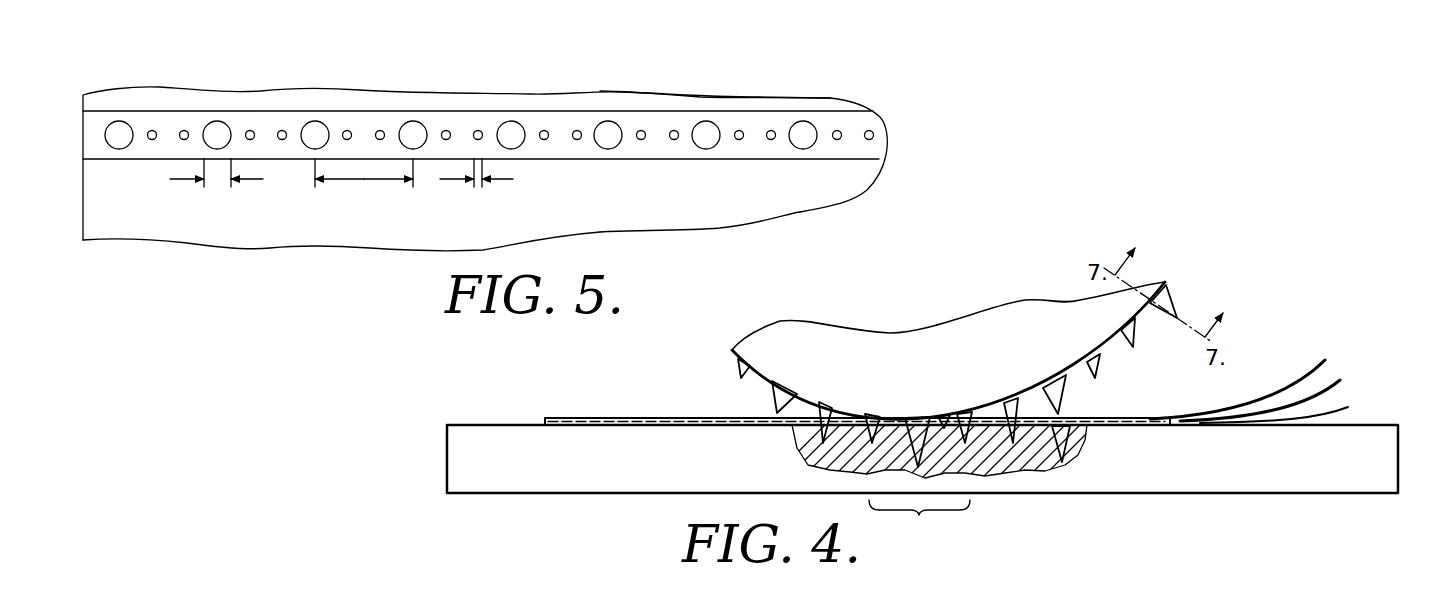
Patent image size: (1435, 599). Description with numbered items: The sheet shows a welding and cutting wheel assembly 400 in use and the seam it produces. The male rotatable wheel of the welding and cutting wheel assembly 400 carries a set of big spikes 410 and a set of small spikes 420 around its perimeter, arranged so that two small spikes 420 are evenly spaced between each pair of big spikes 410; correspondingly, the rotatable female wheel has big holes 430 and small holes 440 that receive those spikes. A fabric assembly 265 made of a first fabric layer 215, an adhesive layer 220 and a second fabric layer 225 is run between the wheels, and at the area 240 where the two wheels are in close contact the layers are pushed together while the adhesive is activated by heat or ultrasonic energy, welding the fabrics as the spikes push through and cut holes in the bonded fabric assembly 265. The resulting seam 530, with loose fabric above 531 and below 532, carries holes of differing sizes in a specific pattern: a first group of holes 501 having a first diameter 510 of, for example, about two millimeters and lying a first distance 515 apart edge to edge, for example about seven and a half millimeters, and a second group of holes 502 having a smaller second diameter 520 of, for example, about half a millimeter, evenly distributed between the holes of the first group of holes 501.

In FIG. 5, the fabric assembly 265 is at (188, 62).
In FIG. 4, the fabric assembly 265 is at (630, 418).
In FIG. 5, the first group of holes 501 is at (224, 124).
In FIG. 5, the second group of holes 502 is at (539, 134).
In FIG. 5, the first diameter 510 is at (255, 180).
In FIG. 5, the first distance 515 is at (365, 182).
In FIG. 5, the second diameter 520 is at (500, 182).
In FIG. 5, the seam 530 is at (875, 120).
In FIG. 5, the loose fabric above 531 is at (788, 103).
In FIG. 5, the loose fabric below 532 is at (837, 187).
In FIG. 4, the welding and cutting wheel assembly 400 is at (1258, 262).
In FIG. 4, the big spikes 410 is at (1172, 297).
In FIG. 4, the small spikes 420 is at (1130, 338).
In FIG. 4, the first fabric layer 215 is at (1312, 368).
In FIG. 4, the adhesive layer 220 is at (1337, 377).
In FIG. 4, the second fabric layer 225 is at (1345, 407).
In FIG. 4, the area 240 is at (945, 484).
In FIG. 4, the small holes 440 is at (1015, 437).
In FIG. 4, the big holes 430 is at (1065, 450).